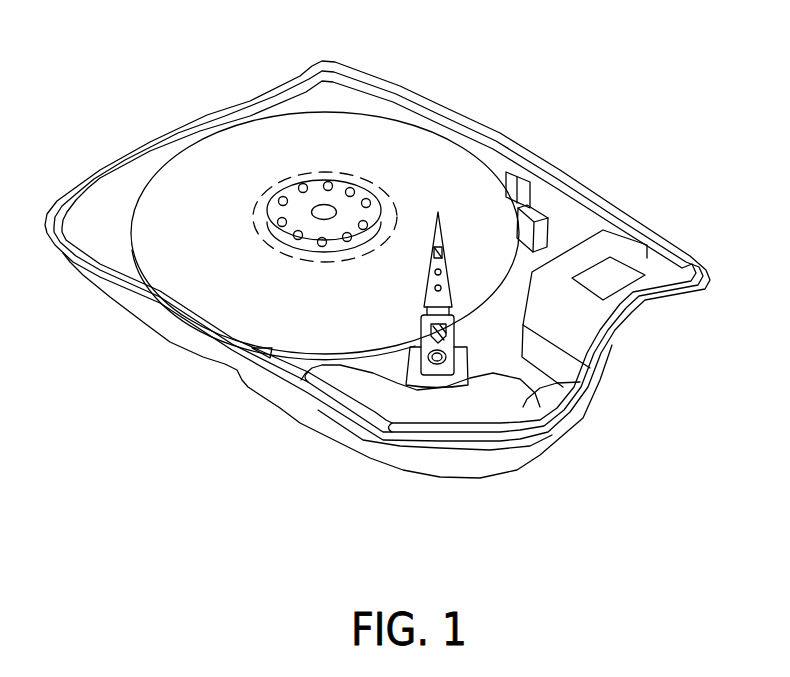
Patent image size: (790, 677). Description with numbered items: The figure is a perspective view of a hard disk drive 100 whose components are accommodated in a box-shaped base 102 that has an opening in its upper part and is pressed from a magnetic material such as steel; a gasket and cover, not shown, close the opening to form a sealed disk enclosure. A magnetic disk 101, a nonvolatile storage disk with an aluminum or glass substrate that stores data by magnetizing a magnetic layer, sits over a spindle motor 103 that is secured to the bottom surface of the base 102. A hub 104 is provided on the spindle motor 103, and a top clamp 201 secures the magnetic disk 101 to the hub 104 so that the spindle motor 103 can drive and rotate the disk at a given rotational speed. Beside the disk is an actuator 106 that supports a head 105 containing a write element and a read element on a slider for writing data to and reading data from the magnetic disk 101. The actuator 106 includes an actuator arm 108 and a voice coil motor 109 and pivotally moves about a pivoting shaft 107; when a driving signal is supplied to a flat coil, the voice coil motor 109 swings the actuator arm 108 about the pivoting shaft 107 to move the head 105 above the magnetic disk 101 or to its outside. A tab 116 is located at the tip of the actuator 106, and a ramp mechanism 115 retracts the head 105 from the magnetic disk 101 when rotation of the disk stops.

The hard disk drive 100 is at (700, 148).
The magnetic disk 101 is at (221, 145).
The base 102 is at (533, 447).
The spindle motor 103 is at (363, 153).
The hub 104 is at (260, 232).
The head 105 is at (445, 257).
The actuator 106 is at (768, 362).
The pivoting shaft 107 is at (437, 366).
The actuator arm 108 is at (447, 298).
The voice coil motor 109 is at (560, 384).
The ramp mechanism 115 is at (553, 228).
The tab 116 is at (440, 215).
The top clamp 201 is at (315, 196).